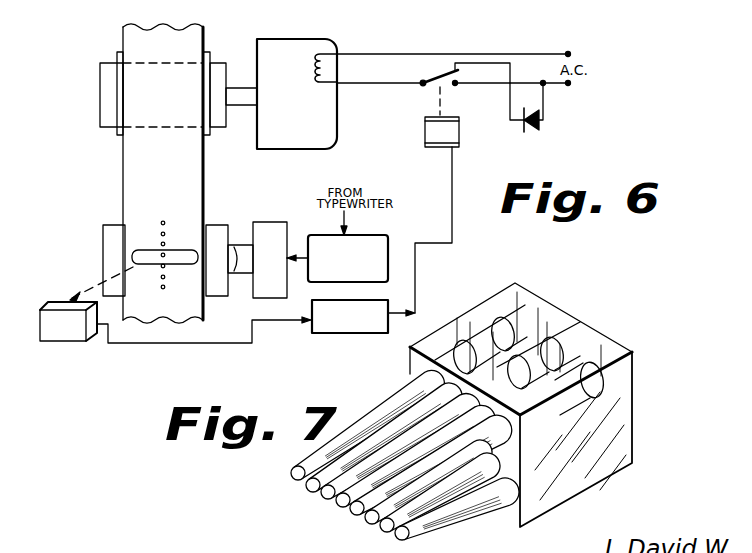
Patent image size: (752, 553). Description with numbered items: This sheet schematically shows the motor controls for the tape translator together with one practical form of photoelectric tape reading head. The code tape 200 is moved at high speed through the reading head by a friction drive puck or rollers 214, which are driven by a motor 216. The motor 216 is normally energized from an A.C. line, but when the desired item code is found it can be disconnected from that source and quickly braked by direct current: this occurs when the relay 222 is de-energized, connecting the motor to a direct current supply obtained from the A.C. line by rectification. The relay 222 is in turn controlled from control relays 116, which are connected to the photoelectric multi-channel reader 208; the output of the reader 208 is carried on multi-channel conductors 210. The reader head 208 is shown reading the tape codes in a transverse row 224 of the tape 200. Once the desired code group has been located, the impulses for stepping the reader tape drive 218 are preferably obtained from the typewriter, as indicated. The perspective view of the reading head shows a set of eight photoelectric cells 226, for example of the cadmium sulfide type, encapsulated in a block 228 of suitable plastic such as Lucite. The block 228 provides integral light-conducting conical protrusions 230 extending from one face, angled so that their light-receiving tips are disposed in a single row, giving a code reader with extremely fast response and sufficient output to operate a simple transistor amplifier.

In FIG. 6, the tape 200 is at (135, 42).
In FIG. 6, the friction drive puck or rollers 214 is at (107, 92).
In FIG. 6, the motor 216 is at (312, 42).
In FIG. 6, the relay 222 is at (433, 130).
In FIG. 6, the transverse row of the tape 224 is at (177, 250).
In FIG. 6, the photoelectric multi-channel reader 208 is at (53, 305).
In FIG. 6, the multi-channel conductors 210 is at (163, 344).
In FIG. 6, the reader tape drive 218 is at (373, 236).
In FIG. 6, the control relays 116 is at (350, 316).
In FIG. 7, the photoelectric cells 226 is at (512, 328).
In FIG. 7, the block 228 is at (630, 412).
In FIG. 7, the light-conducting conical protrusions 230 is at (352, 511).